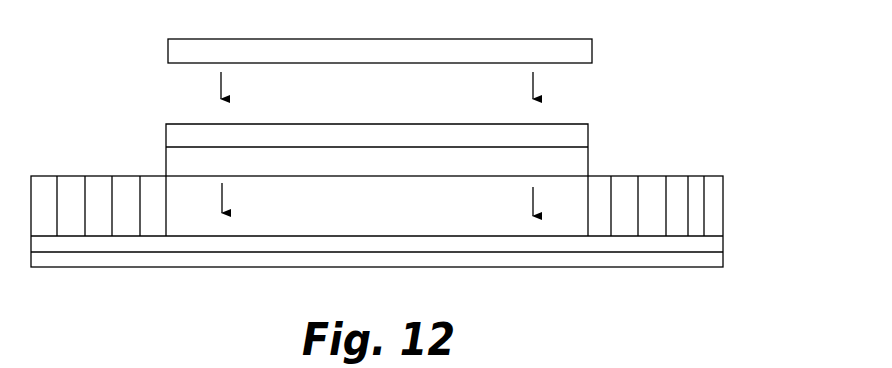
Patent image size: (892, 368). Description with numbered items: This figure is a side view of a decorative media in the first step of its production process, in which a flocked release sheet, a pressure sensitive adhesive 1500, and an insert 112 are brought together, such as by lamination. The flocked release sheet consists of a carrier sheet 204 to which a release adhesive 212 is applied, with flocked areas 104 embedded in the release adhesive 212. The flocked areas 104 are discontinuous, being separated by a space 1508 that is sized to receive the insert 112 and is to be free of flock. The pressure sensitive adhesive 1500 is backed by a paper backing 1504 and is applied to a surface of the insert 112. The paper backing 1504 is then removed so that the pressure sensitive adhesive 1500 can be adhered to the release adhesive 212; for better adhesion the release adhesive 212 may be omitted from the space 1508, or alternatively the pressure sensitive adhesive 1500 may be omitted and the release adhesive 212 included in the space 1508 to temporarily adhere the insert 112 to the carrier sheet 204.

The insert 112 is at (578, 39).
The pressure sensitive adhesive 1500 is at (575, 124).
The paper backing 1504 is at (588, 159).
The space 1508 is at (407, 220).
The flocked areas 104 is at (68, 175).
The release adhesive 212 is at (725, 247).
The carrier sheet 204 is at (713, 268).